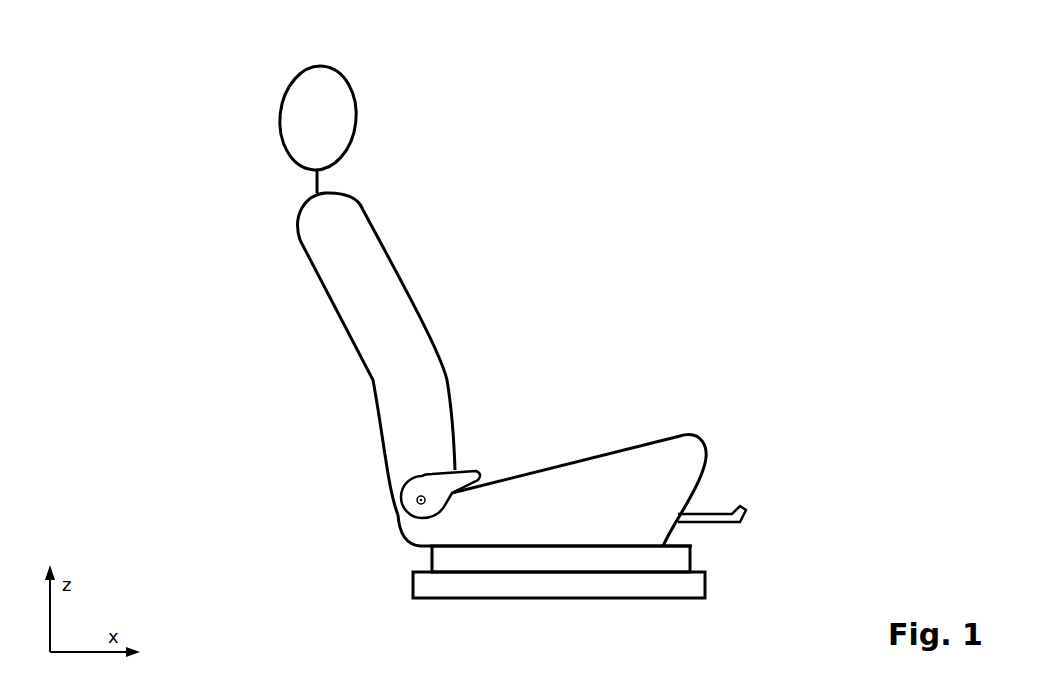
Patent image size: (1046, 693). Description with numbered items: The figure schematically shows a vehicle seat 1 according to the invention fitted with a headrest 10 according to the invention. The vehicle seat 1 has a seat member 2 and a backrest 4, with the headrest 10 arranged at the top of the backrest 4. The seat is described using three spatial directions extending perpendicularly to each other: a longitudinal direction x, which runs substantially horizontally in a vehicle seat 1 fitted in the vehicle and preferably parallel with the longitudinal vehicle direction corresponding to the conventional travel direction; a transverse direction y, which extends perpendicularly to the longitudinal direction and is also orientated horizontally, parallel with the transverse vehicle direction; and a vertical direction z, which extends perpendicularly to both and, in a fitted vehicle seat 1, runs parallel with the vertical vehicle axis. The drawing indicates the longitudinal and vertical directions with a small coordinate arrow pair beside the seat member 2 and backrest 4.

The vehicle seat 1 is at (565, 242).
The seat member 2 is at (676, 455).
The backrest 4 is at (362, 312).
The headrest 10 is at (320, 125).